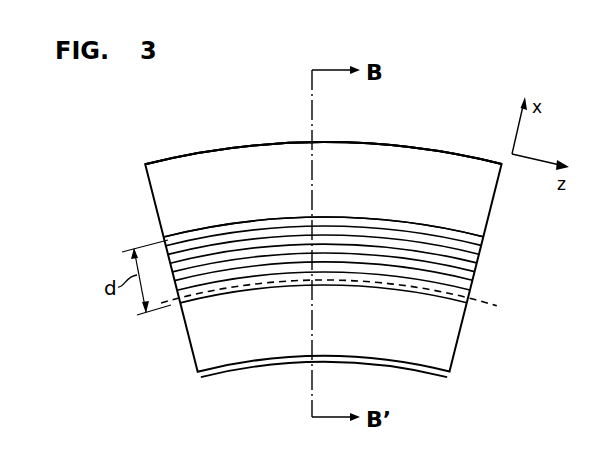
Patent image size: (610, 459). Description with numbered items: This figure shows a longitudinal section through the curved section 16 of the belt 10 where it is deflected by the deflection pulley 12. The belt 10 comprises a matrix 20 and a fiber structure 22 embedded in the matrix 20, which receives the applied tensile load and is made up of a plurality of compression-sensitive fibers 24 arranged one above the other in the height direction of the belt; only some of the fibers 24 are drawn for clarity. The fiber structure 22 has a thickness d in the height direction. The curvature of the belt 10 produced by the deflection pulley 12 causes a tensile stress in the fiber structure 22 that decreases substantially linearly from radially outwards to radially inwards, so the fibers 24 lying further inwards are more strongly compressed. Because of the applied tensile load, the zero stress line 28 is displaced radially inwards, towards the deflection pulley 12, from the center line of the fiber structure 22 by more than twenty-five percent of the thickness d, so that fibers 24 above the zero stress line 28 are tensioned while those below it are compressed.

The belt 10 is at (185, 168).
The deflection pulley 12 is at (222, 380).
The curved section 16 is at (252, 158).
The matrix 20 is at (409, 157).
The fiber structure 22 is at (428, 214).
The compression-sensitive fibers 24 is at (458, 231).
The zero stress line 28 is at (165, 302).